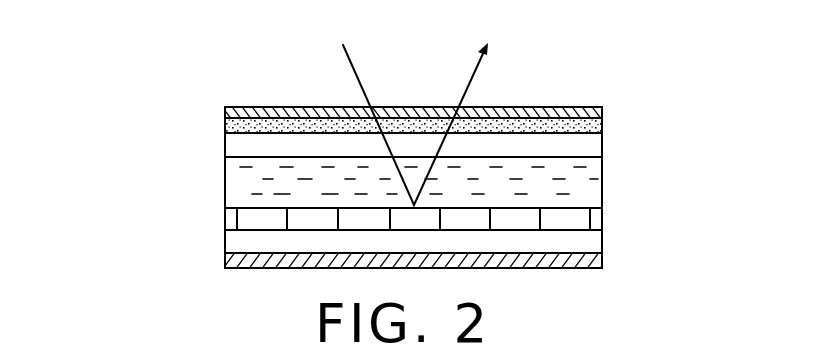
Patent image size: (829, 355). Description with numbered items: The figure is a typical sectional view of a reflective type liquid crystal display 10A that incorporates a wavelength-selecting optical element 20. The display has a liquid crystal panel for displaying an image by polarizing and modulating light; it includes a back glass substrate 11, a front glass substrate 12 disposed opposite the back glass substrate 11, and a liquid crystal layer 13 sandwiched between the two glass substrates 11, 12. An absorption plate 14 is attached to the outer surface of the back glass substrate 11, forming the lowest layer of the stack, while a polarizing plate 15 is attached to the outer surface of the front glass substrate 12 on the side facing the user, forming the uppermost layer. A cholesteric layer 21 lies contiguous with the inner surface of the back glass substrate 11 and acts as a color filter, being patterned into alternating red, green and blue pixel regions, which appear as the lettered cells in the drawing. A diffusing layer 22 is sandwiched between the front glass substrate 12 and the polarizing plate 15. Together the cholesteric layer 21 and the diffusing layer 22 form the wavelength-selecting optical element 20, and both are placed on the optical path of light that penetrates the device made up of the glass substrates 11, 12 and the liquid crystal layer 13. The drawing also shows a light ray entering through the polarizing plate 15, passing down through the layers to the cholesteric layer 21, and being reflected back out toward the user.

The reflective type liquid crystal display 10A is at (594, 88).
The back glass substrate 11 is at (603, 242).
The front glass substrate 12 is at (237, 145).
The liquid crystal layer 13 is at (238, 188).
The absorption plate 14 is at (603, 260).
The polarizing plate 15 is at (603, 112).
The wavelength-selecting optical element 20 is at (705, 130).
The cholesteric layer 21 is at (603, 218).
The diffusing layer 22 is at (603, 128).